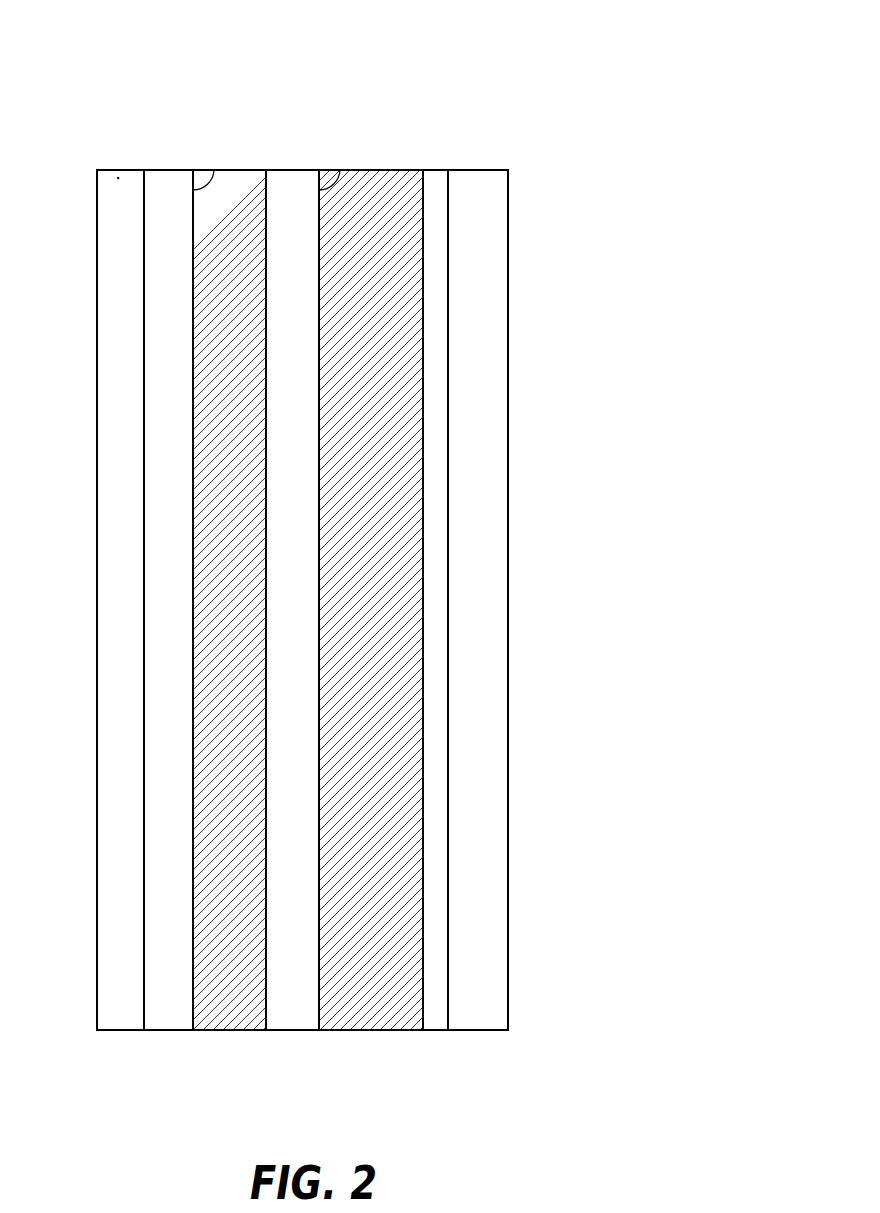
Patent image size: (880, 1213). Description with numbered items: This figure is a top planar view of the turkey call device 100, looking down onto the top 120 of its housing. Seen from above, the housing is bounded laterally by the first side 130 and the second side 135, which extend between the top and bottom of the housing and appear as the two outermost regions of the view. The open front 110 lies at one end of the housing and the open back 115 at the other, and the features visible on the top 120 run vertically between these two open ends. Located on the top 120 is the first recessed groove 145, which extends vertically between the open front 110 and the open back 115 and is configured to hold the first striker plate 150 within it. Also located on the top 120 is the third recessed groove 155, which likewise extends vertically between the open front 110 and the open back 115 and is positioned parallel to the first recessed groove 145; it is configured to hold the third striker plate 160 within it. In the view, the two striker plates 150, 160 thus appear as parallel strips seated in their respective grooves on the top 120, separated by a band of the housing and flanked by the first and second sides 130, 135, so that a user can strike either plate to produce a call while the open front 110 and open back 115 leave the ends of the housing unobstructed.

The turkey call device 100 is at (470, 60).
The open front 110 is at (292, 1031).
The open back 115 is at (293, 168).
The top 120 is at (168, 168).
The first side 130 is at (97, 656).
The second side 135 is at (510, 597).
The first recessed groove 145 is at (210, 170).
The first striker plate 150 is at (224, 1022).
The third recessed groove 155 is at (337, 168).
The third striker plate 160 is at (368, 1022).